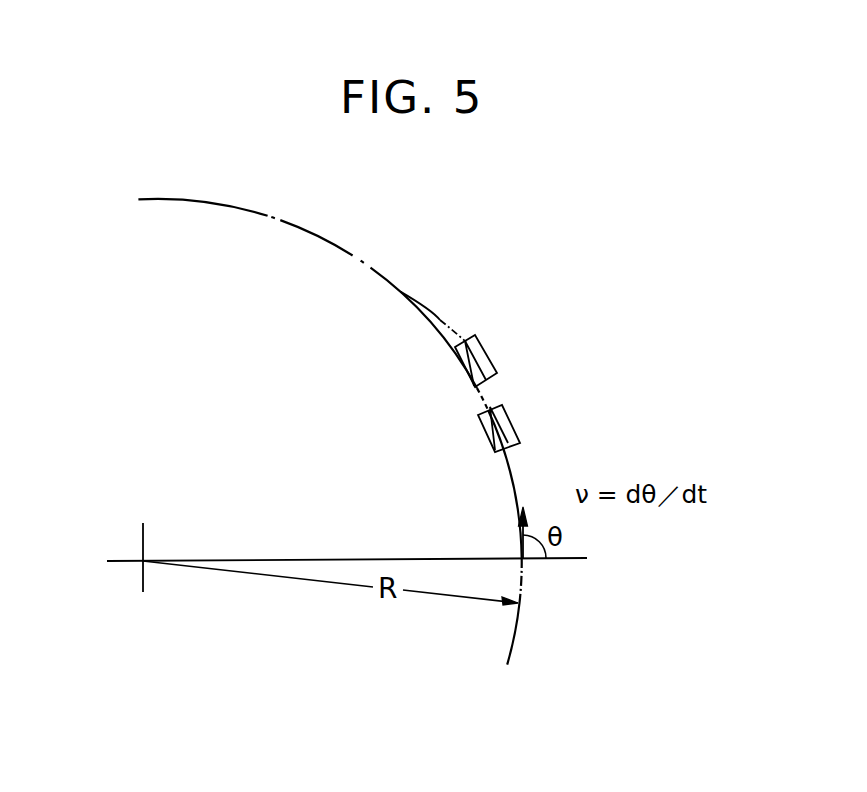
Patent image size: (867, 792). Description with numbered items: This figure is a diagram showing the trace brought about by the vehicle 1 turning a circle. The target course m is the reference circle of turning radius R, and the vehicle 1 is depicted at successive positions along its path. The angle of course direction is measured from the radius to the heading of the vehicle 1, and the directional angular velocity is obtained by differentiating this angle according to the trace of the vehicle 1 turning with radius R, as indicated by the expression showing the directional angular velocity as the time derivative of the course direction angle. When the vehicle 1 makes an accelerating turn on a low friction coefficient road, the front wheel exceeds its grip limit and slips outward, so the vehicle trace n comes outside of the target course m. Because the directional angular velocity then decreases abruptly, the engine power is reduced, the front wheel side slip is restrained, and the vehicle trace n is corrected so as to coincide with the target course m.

The vehicle 1 is at (497, 355).
The target course m is at (273, 223).
The vehicle trace n is at (448, 327).